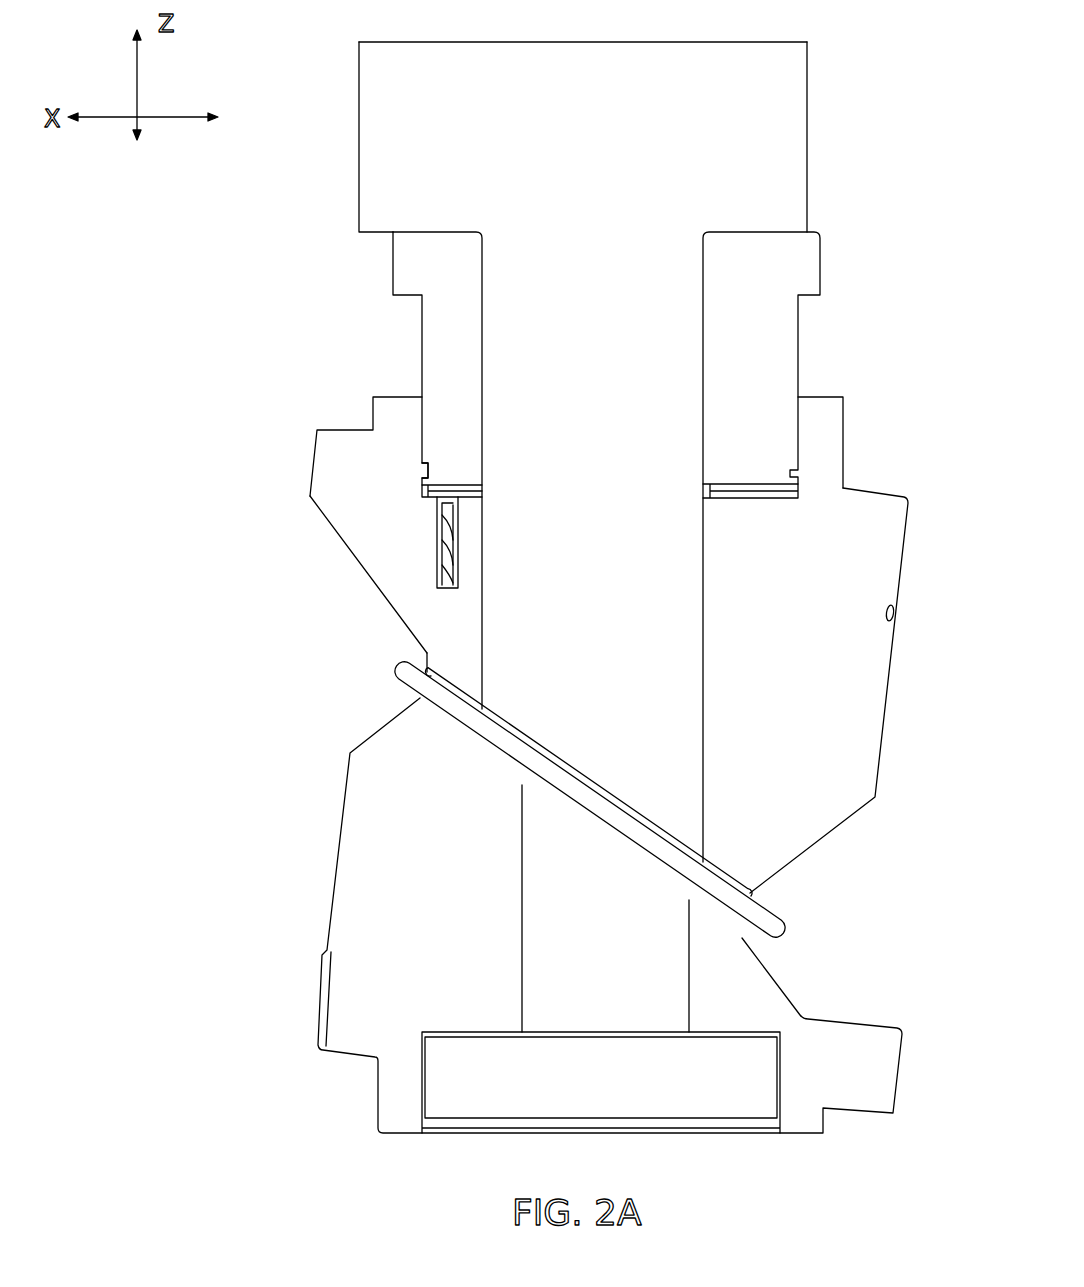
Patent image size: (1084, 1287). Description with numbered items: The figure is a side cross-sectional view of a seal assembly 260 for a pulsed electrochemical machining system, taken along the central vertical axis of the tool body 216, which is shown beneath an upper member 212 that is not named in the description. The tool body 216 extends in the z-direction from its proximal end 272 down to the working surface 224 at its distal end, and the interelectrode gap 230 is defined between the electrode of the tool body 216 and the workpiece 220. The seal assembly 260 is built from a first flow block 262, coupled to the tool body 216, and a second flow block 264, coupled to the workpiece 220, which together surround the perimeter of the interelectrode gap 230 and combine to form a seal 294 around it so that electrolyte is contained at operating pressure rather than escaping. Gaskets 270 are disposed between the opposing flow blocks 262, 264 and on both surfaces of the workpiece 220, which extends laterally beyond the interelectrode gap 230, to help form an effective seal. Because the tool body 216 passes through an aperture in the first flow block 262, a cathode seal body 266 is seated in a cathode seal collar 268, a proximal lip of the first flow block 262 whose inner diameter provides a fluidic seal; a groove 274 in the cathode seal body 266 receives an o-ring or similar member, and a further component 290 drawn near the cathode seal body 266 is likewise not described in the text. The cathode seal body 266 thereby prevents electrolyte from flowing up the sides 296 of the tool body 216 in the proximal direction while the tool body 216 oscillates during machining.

The upper support block 212 is at (808, 100).
The tool body 216 is at (512, 372).
The workpiece 220 is at (781, 930).
The working surface 224 is at (507, 720).
The interelectrode gap 230 is at (582, 760).
The seal assembly 260 is at (248, 428).
The first flow block 262 is at (310, 492).
The second flow block 264 is at (333, 1010).
The cathode seal body 266 is at (785, 336).
The cathode seal collar 268 is at (832, 452).
The gaskets 270 is at (416, 666).
The proximal end 272 is at (359, 43).
The groove 274 is at (425, 470).
The spring bracket 290 is at (500, 605).
The seal 294 is at (390, 683).
The sides 296 is at (478, 330).